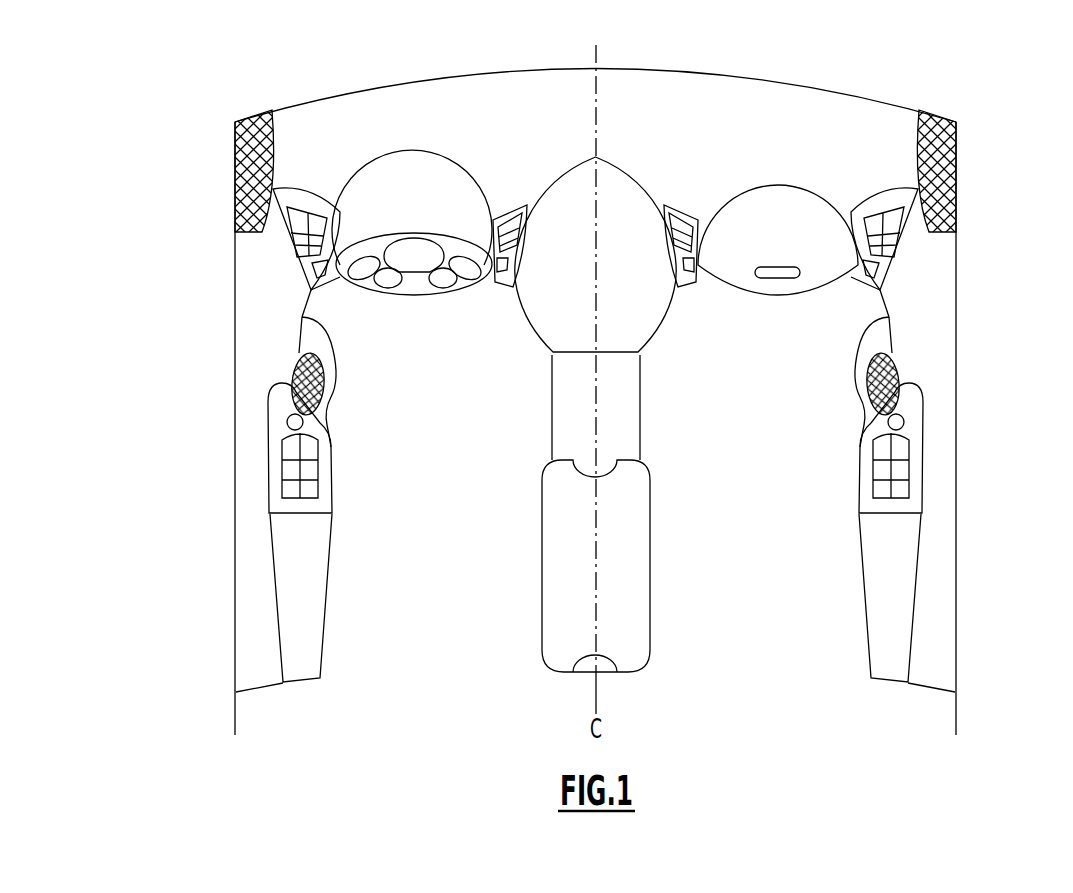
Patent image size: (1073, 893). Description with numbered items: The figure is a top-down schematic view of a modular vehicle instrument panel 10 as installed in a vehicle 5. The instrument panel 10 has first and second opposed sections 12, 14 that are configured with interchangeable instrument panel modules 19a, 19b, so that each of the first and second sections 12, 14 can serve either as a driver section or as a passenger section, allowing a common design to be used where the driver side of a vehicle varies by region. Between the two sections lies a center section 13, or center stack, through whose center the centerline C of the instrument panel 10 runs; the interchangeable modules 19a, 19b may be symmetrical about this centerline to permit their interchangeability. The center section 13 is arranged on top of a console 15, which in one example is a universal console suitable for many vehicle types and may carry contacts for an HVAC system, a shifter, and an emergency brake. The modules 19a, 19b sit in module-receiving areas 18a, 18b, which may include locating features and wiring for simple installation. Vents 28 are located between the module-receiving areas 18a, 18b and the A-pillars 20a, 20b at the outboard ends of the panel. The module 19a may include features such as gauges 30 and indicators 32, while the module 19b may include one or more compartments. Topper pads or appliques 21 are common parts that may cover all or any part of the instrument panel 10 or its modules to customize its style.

The vehicle 5 is at (212, 525).
The modular vehicle instrument panel 10 is at (800, 70).
The first section 12 is at (204, 312).
The center section 13 is at (665, 338).
The second section 14 is at (985, 432).
The console 15 is at (552, 418).
The module-receiving area 18a is at (400, 163).
The module-receiving area 18b is at (792, 163).
The interchangeable instrument panel module 19a is at (343, 277).
The interchangeable instrument panel module 19b is at (843, 277).
The A-pillar 20a is at (256, 152).
The A-pillar 20b is at (934, 153).
The topper pad or applique 21 is at (645, 98).
The vent 28 is at (305, 190).
The gauge 30 is at (418, 236).
The indicator 32 is at (388, 280).